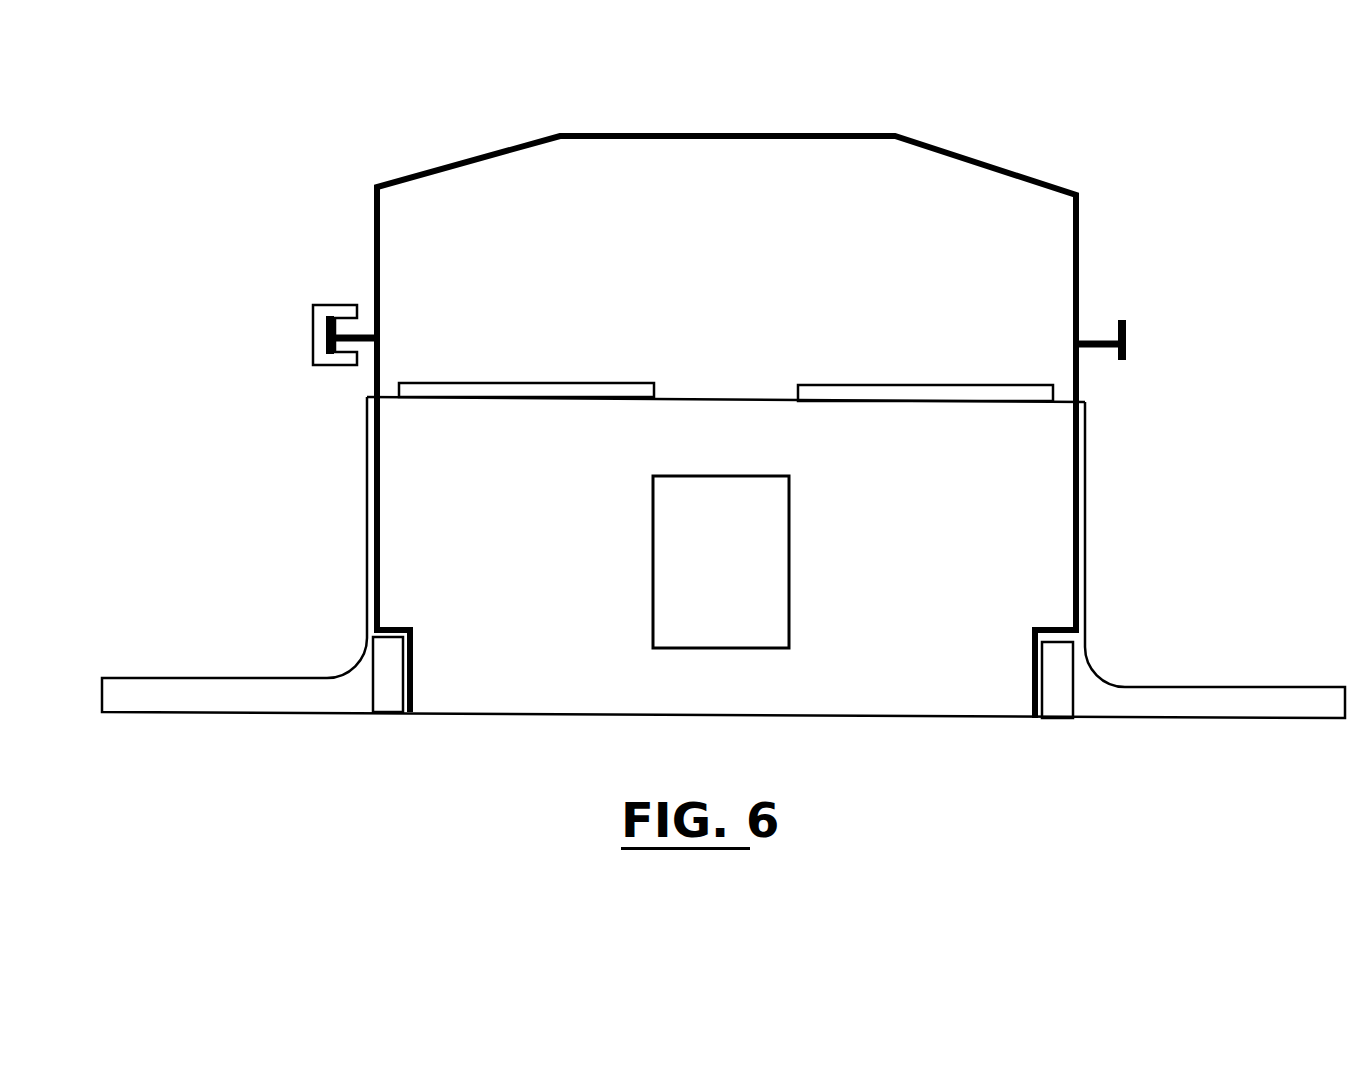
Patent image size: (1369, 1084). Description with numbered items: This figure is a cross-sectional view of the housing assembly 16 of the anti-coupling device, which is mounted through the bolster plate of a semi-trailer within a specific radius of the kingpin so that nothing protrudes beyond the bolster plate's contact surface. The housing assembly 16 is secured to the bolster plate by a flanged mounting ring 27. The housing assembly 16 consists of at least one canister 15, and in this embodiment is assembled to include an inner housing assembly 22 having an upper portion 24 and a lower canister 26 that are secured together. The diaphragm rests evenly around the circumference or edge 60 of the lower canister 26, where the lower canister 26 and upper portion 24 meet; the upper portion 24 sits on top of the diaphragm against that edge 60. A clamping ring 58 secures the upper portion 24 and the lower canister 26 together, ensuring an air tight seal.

The canister 15 is at (377, 192).
The housing assembly 16 is at (375, 492).
The inner housing assembly 22 is at (1012, 243).
The upper portion 24 is at (454, 254).
The lower canister 26 is at (1078, 380).
The flanged mounting ring 27 is at (168, 678).
The clamping ring 58 is at (313, 331).
The edge 60 is at (1098, 332).